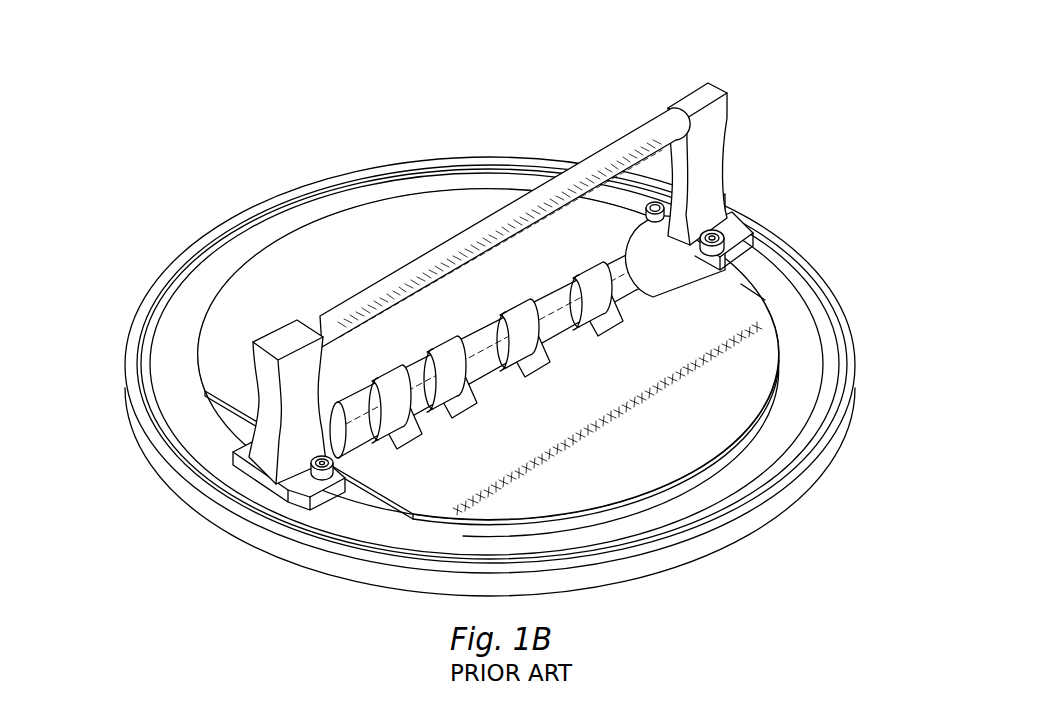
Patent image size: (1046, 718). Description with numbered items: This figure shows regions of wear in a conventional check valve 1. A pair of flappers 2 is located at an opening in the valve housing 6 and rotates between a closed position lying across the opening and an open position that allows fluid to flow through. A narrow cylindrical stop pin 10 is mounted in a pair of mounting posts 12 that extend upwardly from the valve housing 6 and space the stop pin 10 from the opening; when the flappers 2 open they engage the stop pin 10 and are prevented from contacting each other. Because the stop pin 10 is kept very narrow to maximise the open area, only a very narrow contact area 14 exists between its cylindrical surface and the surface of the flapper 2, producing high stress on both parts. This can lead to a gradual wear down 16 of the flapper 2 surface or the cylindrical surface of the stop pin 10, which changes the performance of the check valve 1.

The check valve 1 is at (240, 167).
The flapper 2 is at (743, 282).
The valve housing 6 is at (152, 463).
The stop pin 10 is at (625, 257).
The mounting post 12 is at (710, 176).
The contact area 14 is at (668, 128).
The wear down 16 is at (565, 192).